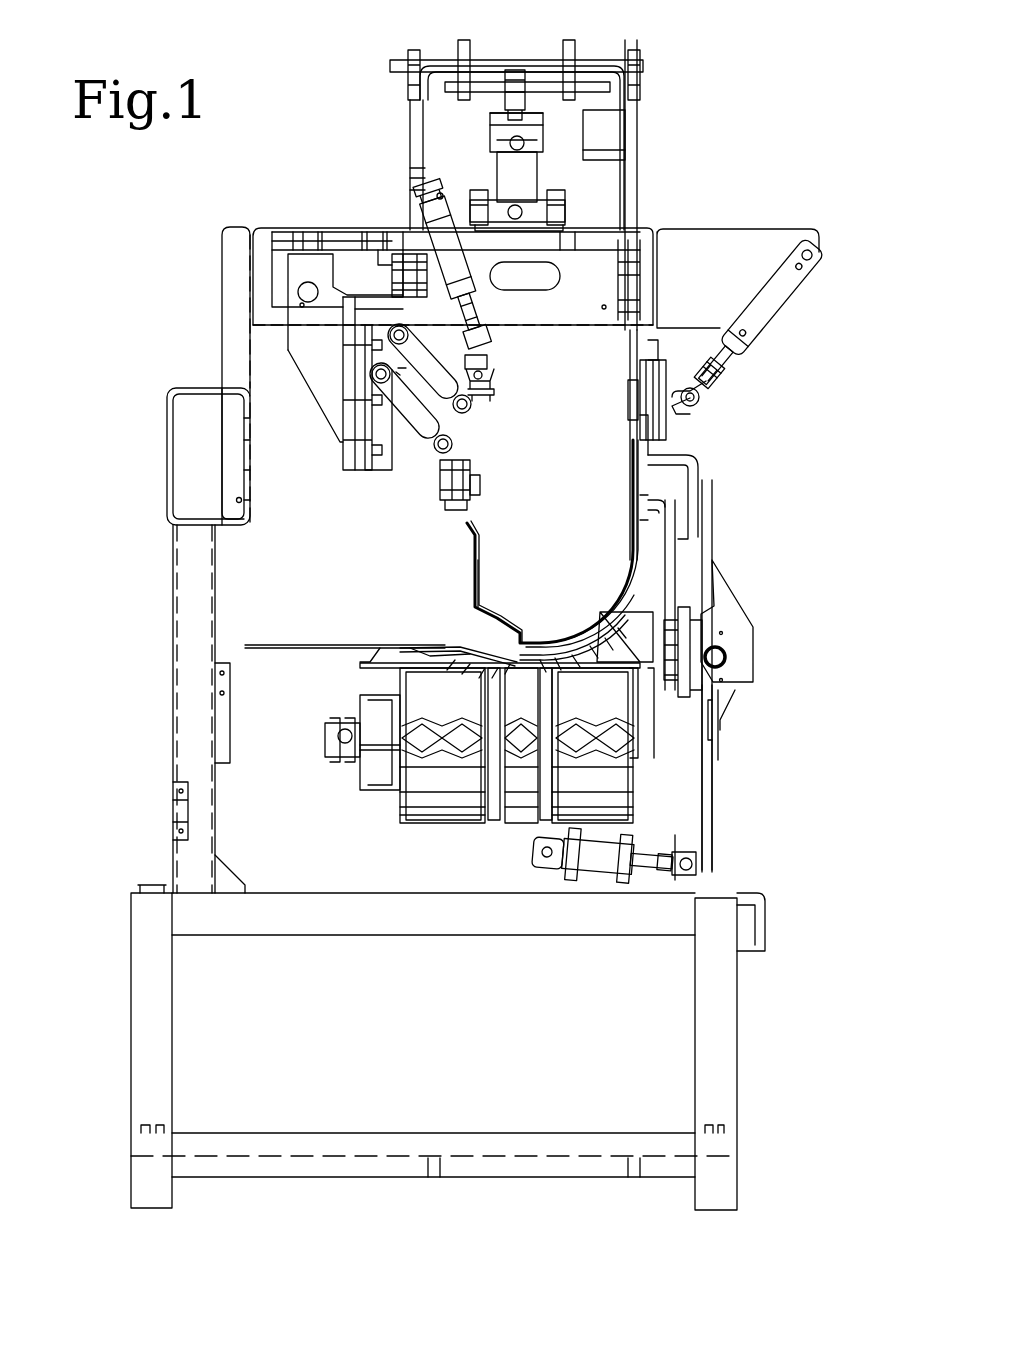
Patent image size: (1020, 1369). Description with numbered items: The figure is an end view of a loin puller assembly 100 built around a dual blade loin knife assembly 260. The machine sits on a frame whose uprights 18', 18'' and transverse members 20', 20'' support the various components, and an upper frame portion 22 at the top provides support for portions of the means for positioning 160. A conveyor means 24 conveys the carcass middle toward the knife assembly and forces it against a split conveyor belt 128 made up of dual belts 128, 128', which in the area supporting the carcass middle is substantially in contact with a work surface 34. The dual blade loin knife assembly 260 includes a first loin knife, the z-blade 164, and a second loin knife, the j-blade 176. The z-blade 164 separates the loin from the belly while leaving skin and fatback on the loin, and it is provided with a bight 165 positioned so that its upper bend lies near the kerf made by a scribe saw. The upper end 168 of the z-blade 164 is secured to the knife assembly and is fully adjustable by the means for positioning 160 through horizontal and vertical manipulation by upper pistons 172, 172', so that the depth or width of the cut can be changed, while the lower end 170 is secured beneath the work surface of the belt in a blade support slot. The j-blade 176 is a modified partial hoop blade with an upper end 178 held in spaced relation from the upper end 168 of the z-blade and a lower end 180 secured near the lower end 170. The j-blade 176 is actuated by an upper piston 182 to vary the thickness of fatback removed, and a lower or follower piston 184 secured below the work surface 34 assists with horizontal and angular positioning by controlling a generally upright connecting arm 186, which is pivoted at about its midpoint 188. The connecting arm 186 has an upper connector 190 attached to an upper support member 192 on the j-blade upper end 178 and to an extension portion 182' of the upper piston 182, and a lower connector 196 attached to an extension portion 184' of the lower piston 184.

The loin puller assembly 100 is at (172, 248).
The upper frame portion 22 is at (550, 62).
The upper piston 172 is at (436, 313).
The upper piston 172' is at (516, 372).
The upper piston 182 is at (762, 310).
The extension portion of upper piston 182' is at (736, 394).
The means for positioning 160 is at (616, 397).
The upper support member 192 is at (660, 440).
The upper end of z-blade 168 is at (468, 512).
The upper end of j-blade 178 is at (686, 500).
The upper connector 190 is at (702, 522).
The j-blade 176 is at (645, 548).
The z-blade 164 is at (468, 540).
The dual blade loin knife assembly 260 is at (372, 540).
The bight 165 is at (505, 625).
The work surface 34 is at (418, 650).
The lower end of j-blade 180 is at (535, 645).
The lower end of z-blade 170 is at (500, 652).
The midpoint of connecting arm 188 is at (727, 657).
The conveyor means 24 is at (300, 788).
The connecting arm 186 is at (712, 775).
The split conveyor belt 128 is at (482, 770).
The conveyor belt 128' is at (654, 741).
The lower piston 184 is at (677, 866).
The extension portion of lower piston 184' is at (727, 836).
The lower connector 196 is at (710, 855).
The upright 18' is at (102, 1046).
The upright 18'' is at (765, 1051).
The transverse member 20'' is at (433, 954).
The transverse member 20' is at (434, 1191).